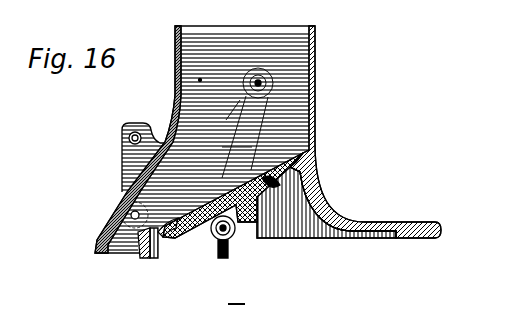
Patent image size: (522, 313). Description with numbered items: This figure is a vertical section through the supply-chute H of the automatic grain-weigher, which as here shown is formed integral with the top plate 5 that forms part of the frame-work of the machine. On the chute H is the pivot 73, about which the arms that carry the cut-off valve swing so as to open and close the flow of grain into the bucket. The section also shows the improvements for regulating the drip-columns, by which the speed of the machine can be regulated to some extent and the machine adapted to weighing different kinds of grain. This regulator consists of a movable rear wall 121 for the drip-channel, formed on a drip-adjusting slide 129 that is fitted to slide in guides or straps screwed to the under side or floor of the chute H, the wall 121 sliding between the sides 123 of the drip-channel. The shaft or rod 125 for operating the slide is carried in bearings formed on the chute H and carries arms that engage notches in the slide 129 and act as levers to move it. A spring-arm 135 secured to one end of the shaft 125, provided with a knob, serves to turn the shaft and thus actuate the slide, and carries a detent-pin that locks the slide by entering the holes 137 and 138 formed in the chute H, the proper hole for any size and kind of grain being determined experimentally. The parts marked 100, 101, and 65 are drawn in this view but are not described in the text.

The supply-chute H is at (237, 31).
The shaft 100 is at (262, 78).
The arm 101 is at (272, 96).
The spring-arm 135 is at (235, 110).
The hole 137 is at (213, 195).
The hole 138 is at (176, 88).
The pivot 73 is at (113, 205).
The base casting wall 65 is at (110, 253).
The drip-adjusting slide 129 is at (158, 233).
The side of drip-channel 123 is at (143, 256).
The movable rear wall 121 is at (152, 259).
The shaft 125 is at (238, 237).
The top plate 5 is at (436, 232).